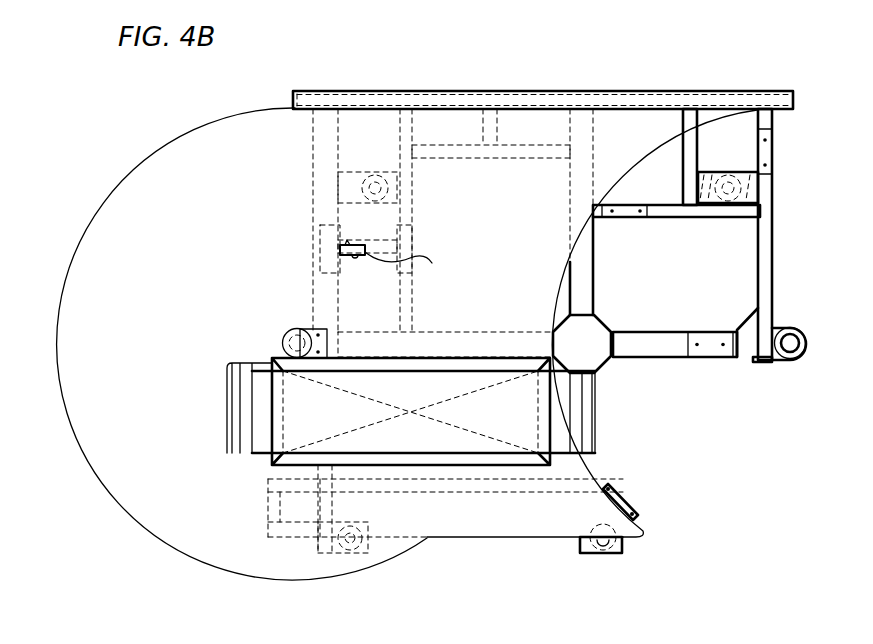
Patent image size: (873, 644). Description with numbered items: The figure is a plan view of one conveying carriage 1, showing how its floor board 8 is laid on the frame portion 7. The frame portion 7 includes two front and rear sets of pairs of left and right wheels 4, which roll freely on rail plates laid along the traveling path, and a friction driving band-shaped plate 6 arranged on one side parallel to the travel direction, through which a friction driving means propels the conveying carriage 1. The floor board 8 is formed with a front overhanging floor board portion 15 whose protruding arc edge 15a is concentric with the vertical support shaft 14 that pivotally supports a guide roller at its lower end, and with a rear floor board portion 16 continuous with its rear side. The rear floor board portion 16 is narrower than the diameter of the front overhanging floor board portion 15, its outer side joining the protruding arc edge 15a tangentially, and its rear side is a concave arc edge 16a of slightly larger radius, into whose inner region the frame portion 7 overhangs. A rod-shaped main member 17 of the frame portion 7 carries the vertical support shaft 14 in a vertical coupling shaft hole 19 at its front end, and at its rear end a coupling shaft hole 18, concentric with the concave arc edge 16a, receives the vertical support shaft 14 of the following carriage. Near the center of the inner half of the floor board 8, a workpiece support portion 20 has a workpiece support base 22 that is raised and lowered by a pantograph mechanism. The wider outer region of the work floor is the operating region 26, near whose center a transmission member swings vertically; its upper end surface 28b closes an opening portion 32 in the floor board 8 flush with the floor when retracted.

The conveying carriage 1 is at (190, 535).
The wheels 4 is at (398, 185).
The friction driving band-shaped plate 6 is at (540, 91).
The frame portion 7 is at (778, 266).
The floor board 8 is at (196, 266).
The vertical support shaft 14 is at (305, 328).
The front overhanging floor board portion 15 is at (158, 462).
The protruding arc edge 15a is at (97, 220).
The rear floor board portion 16 is at (547, 242).
The concave arc edge 16a is at (612, 206).
The rod-shaped main member 17 is at (493, 343).
The coupling shaft hole 18 is at (790, 347).
The vertical coupling shaft hole 19 is at (283, 345).
The workpiece support portion 20 is at (446, 378).
The workpiece support base 22 is at (445, 440).
The operating region 26 is at (527, 238).
The upper end surface 28b is at (340, 250).
The opening portion 32 is at (414, 262).